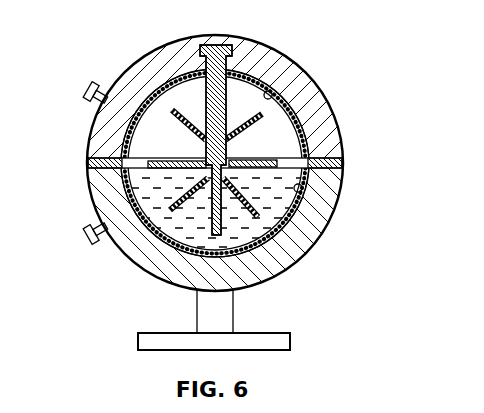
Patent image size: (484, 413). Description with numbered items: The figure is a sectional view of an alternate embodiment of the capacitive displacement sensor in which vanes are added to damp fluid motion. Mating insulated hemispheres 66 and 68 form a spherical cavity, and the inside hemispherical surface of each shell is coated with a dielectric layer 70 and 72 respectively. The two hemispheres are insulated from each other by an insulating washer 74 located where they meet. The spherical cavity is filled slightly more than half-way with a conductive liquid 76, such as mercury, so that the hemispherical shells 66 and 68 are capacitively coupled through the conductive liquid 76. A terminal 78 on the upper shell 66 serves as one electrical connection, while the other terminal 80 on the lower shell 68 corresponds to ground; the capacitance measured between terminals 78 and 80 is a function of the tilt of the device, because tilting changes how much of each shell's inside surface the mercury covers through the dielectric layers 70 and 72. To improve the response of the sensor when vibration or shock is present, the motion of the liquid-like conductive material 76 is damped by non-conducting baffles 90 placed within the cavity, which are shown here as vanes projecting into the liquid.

The upper insulated hemisphere 66 is at (262, 55).
The lower insulated hemisphere 68 is at (283, 262).
The dielectric layer 70 is at (288, 88).
The dielectric layer 72 is at (301, 191).
The insulating washer 74 is at (343, 162).
The conductive liquid 76 is at (277, 195).
The terminal 78 is at (84, 89).
The terminal 80 is at (84, 239).
The non-conducting baffles 90 is at (237, 136).